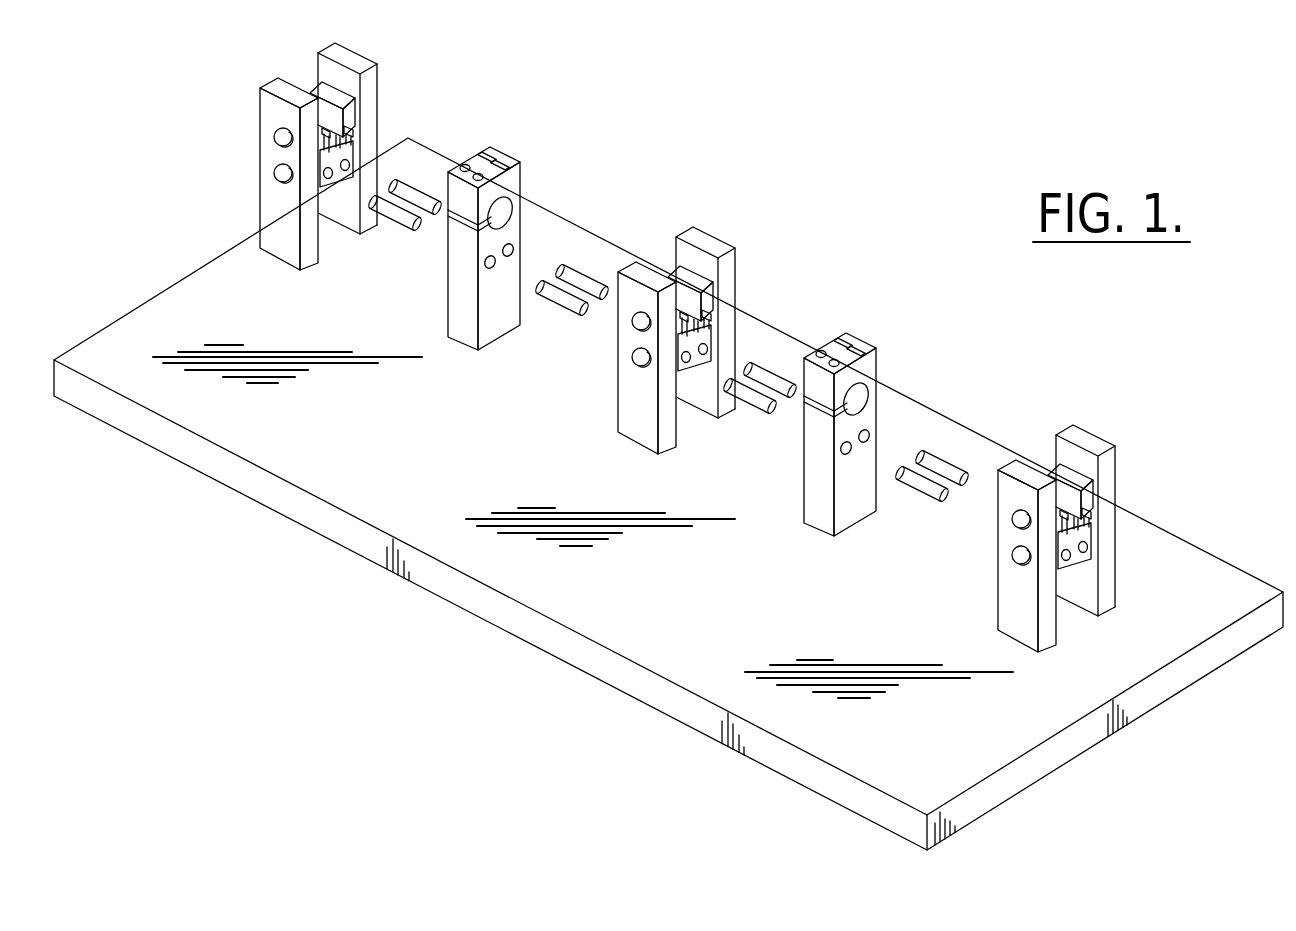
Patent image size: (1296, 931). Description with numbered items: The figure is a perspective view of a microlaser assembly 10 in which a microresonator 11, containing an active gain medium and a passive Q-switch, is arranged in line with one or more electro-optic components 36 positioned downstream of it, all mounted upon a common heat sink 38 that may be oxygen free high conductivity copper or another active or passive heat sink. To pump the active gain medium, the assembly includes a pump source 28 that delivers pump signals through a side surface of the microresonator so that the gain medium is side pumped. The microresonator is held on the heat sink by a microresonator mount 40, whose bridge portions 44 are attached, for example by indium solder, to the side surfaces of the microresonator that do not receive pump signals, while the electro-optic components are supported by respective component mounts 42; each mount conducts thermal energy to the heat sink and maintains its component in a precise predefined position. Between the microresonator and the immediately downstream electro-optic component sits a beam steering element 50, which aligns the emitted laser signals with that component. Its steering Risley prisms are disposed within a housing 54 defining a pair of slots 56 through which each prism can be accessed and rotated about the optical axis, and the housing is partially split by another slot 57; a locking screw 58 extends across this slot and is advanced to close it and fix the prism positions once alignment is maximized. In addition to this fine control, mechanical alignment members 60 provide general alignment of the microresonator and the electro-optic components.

The microlaser assembly 10 is at (825, 213).
The microresonator 11 is at (328, 133).
The pump source 28 is at (317, 157).
The electro-optic components 36 is at (706, 329).
The heat sink 38 is at (1190, 562).
The microresonator mount 40 is at (268, 193).
The component mounts 42 is at (728, 340).
The bridge portions 44 is at (353, 152).
The beam steering element 50 is at (715, 317).
The housing 54 is at (492, 328).
The slots 56 is at (485, 148).
The slot 57 is at (822, 410).
The locking screw 58 is at (830, 345).
The mechanical alignment members 60 is at (393, 218).